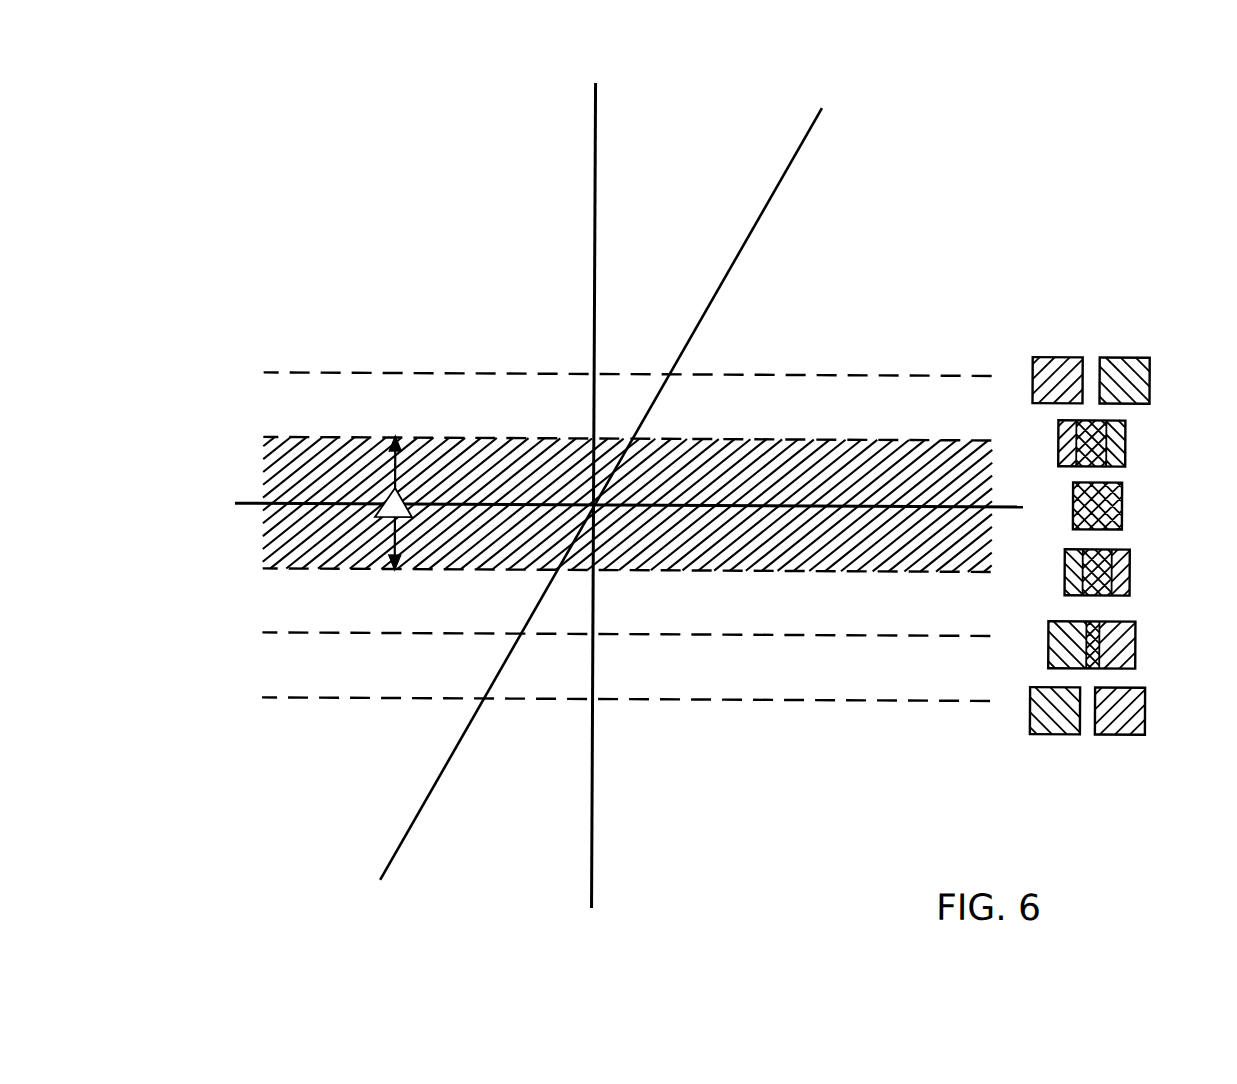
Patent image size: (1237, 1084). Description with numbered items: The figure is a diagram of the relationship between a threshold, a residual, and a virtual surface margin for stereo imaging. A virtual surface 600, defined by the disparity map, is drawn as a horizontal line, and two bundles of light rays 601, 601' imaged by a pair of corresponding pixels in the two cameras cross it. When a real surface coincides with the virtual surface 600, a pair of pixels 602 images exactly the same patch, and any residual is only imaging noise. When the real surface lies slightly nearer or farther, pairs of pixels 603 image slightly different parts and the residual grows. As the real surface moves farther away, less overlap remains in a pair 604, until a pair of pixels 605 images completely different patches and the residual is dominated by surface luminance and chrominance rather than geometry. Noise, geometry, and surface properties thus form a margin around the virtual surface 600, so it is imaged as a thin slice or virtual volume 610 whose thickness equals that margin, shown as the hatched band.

The virtual surface 600 is at (253, 507).
The bundle of light rays 601 is at (636, 495).
The bundle of light rays 601' is at (627, 494).
The pair of pixels 602 is at (1123, 506).
The pairs of pixels 603 is at (1126, 443).
The pair 604 is at (1137, 644).
The pair of pixels 605 is at (1150, 381).
The virtual volume 610 is at (805, 463).